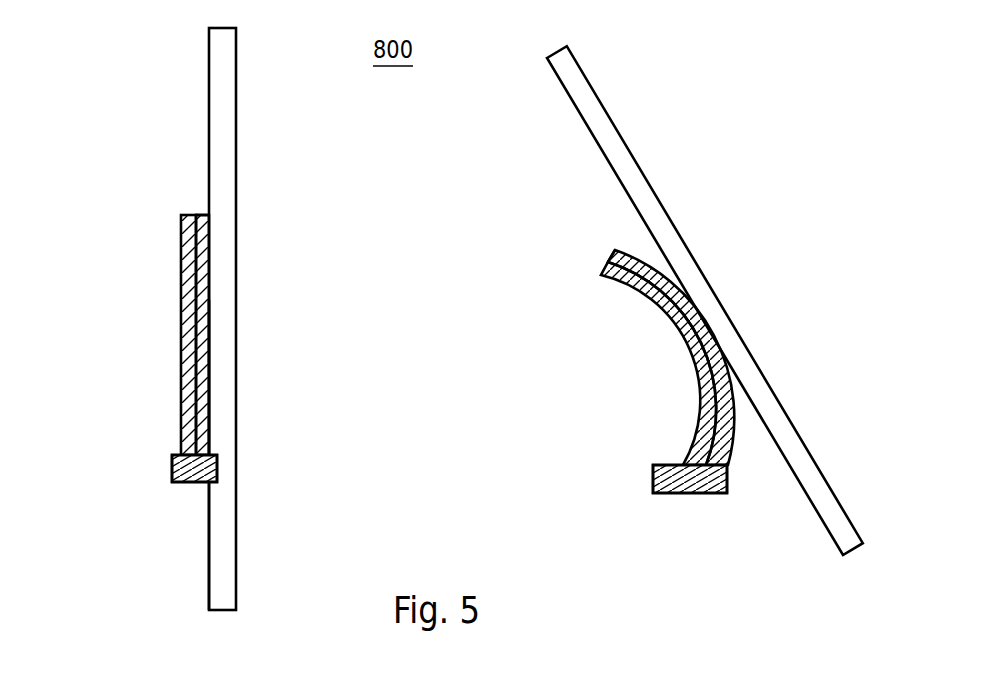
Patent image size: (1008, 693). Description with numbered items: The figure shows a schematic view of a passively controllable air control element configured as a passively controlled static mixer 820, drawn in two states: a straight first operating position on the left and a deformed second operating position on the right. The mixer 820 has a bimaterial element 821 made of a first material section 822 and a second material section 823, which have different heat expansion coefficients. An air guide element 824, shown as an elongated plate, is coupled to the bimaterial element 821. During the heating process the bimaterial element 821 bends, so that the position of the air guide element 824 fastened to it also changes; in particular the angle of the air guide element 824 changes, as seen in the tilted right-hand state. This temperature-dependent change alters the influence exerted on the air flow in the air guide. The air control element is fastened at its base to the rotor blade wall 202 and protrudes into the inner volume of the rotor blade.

The passively controllable static mixer 820 is at (236, 152).
The air guide element 824 is at (223, 520).
The second material section 823 is at (205, 214).
The first material section 822 is at (181, 262).
The bimaterial element 821 is at (180, 348).
The rotor blade wall 202 is at (175, 483).